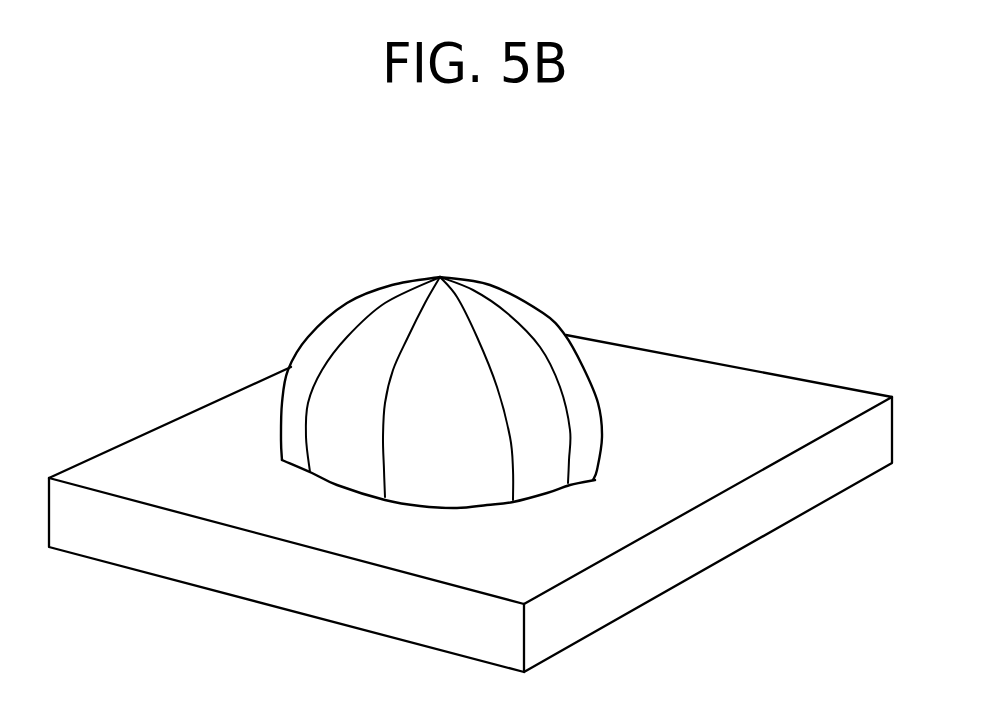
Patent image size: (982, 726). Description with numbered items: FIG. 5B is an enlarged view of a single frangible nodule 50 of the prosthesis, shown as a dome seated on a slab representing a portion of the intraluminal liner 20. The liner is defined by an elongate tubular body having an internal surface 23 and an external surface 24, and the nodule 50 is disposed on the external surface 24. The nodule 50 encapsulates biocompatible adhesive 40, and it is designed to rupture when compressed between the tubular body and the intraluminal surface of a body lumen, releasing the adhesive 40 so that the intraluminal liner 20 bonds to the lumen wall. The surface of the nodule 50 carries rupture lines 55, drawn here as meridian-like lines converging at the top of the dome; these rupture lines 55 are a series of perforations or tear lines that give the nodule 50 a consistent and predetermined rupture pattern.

The intraluminal liner 20 is at (470, 458).
The internal surface 23 is at (733, 555).
The external surface 24 is at (647, 373).
The biocompatible adhesive 40 is at (363, 388).
The nodule 50 is at (377, 325).
The rupture lines 55 is at (533, 347).